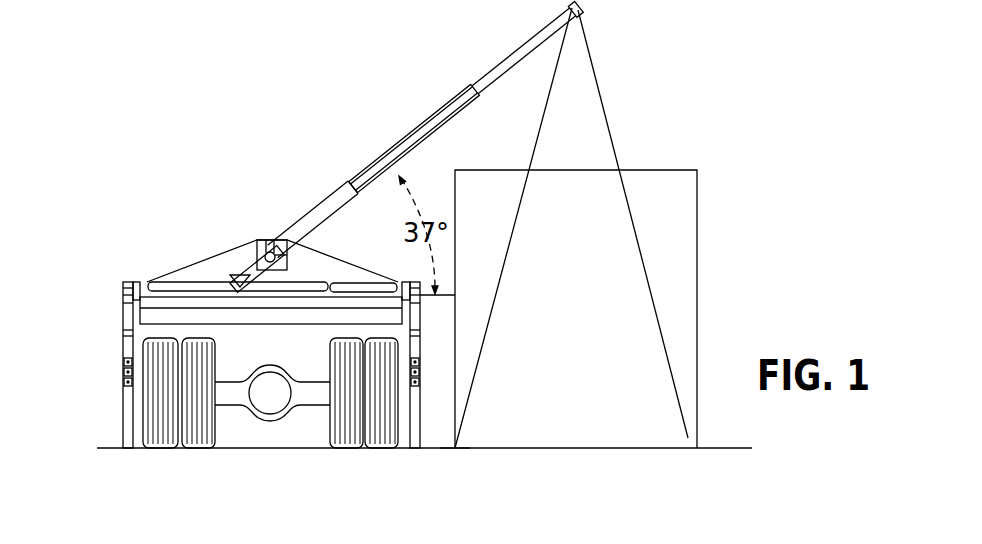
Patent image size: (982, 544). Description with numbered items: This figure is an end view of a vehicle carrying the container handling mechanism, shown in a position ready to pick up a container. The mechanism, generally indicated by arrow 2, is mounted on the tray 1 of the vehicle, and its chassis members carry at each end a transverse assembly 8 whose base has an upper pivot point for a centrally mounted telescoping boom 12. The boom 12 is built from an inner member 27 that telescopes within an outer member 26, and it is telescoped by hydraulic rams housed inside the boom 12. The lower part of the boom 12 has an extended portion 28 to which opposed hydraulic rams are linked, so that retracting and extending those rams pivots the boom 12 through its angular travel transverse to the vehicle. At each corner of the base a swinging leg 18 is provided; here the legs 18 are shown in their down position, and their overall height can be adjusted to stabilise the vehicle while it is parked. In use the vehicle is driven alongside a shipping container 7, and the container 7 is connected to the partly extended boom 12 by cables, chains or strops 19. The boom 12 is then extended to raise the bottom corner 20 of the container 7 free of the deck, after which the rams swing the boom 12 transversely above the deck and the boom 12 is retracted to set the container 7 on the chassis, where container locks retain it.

The tray 1 is at (147, 314).
The mechanism 2 is at (426, 129).
The shipping container 7 is at (700, 278).
The transverse assembly 8 is at (200, 252).
The telescoping boom 12 is at (410, 132).
The swinging leg 18 is at (123, 401).
The cables, chains or strops 19 is at (553, 100).
The bottom corner 20 is at (455, 448).
The member 26 is at (357, 177).
The inner member 27 is at (510, 53).
The extended portion 28 is at (247, 258).